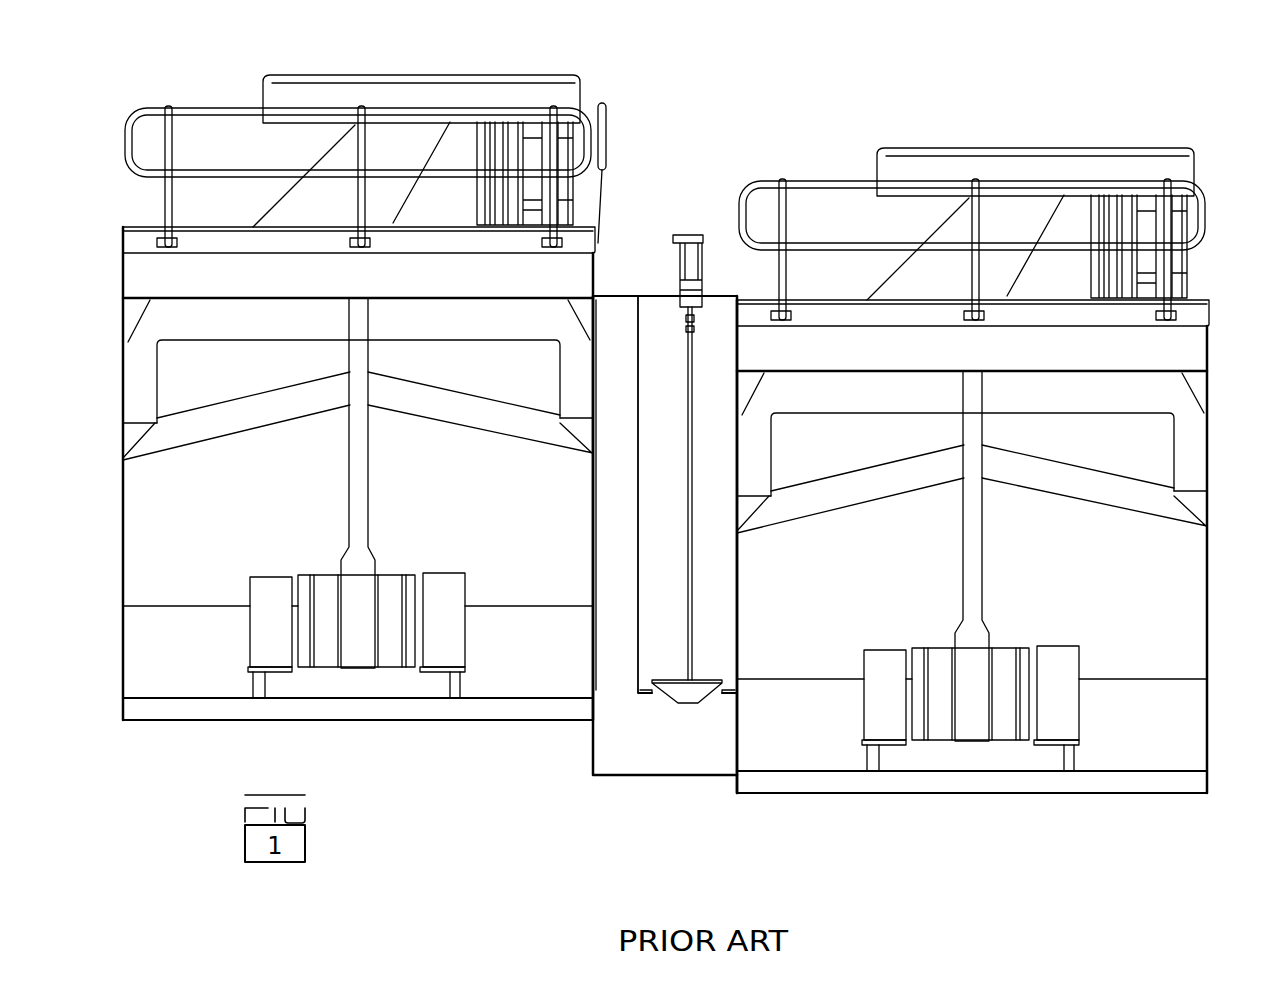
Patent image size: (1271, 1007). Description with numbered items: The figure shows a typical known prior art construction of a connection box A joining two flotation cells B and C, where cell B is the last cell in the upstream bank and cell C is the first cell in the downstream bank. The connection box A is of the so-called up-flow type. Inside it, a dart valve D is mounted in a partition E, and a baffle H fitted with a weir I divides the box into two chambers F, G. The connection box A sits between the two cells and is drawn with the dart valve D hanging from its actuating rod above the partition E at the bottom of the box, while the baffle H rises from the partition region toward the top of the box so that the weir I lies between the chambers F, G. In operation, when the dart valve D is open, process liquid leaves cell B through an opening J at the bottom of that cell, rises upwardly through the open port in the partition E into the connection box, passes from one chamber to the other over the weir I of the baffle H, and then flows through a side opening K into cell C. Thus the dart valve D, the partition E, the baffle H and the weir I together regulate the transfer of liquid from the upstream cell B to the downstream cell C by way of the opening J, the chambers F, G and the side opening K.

The connection box A is at (658, 775).
The cell B is at (364, 435).
The cell C is at (973, 506).
The dart valve D is at (680, 660).
The partition E is at (717, 697).
The chamber F is at (617, 533).
The chamber G is at (678, 457).
The baffle H is at (642, 348).
The weir I is at (638, 323).
The opening J is at (587, 653).
The side opening K is at (737, 648).